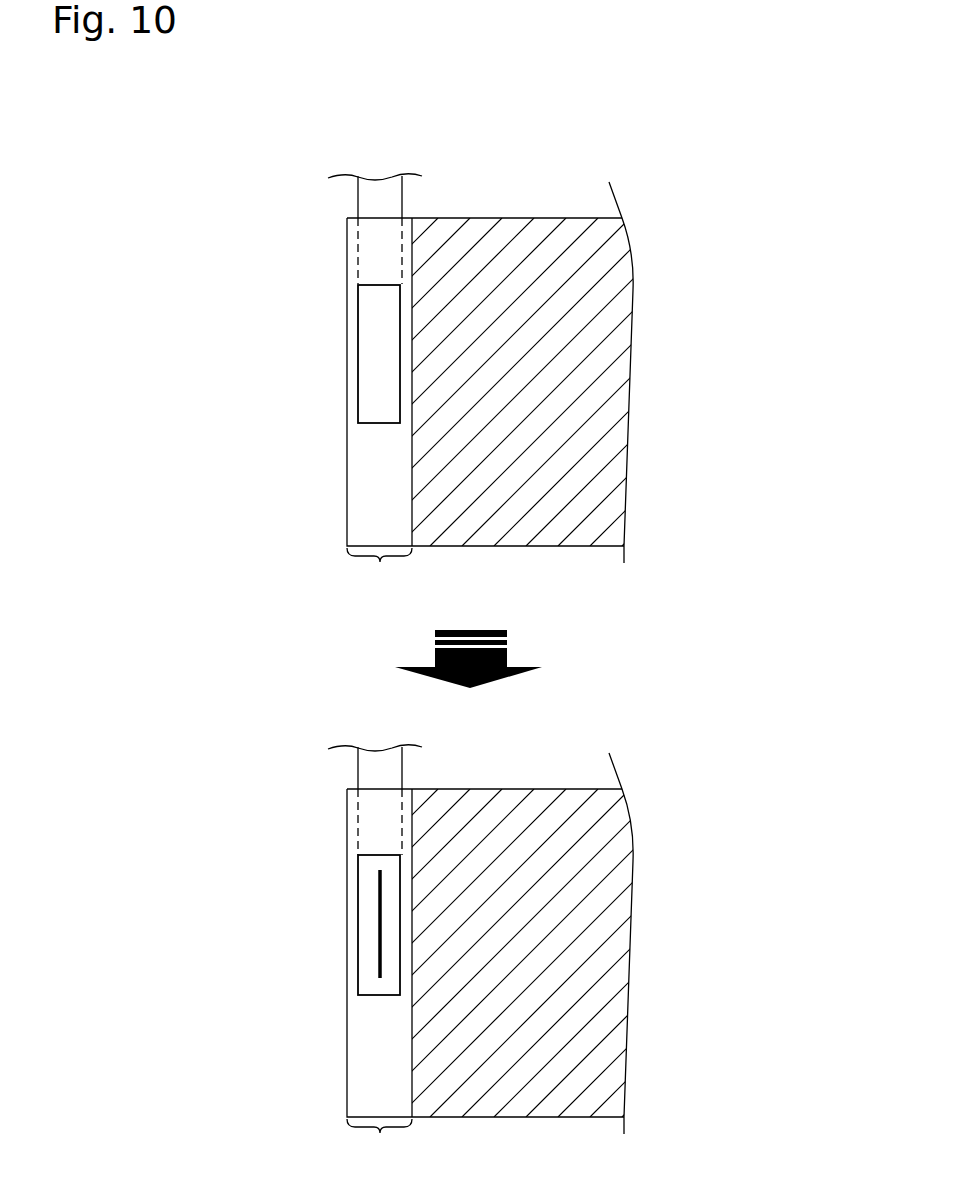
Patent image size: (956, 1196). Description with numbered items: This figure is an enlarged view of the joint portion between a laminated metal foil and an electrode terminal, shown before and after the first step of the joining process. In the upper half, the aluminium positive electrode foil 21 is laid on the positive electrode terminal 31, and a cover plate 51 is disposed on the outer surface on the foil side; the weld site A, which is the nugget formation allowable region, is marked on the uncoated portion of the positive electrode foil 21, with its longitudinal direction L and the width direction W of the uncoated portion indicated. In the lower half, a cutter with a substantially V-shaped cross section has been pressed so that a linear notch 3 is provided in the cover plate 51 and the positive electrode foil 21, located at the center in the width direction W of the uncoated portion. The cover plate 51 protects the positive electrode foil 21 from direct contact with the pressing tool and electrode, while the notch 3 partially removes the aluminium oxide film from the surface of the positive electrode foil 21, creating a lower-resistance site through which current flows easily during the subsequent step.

The positive electrode foil 21 is at (353, 475).
The positive electrode terminal 31 is at (367, 200).
The cover plate 51 is at (366, 381).
The notch 3 is at (380, 925).
The weld site A is at (341, 325).
The longitudinal direction L is at (238, 307).
The width direction W is at (565, 152).